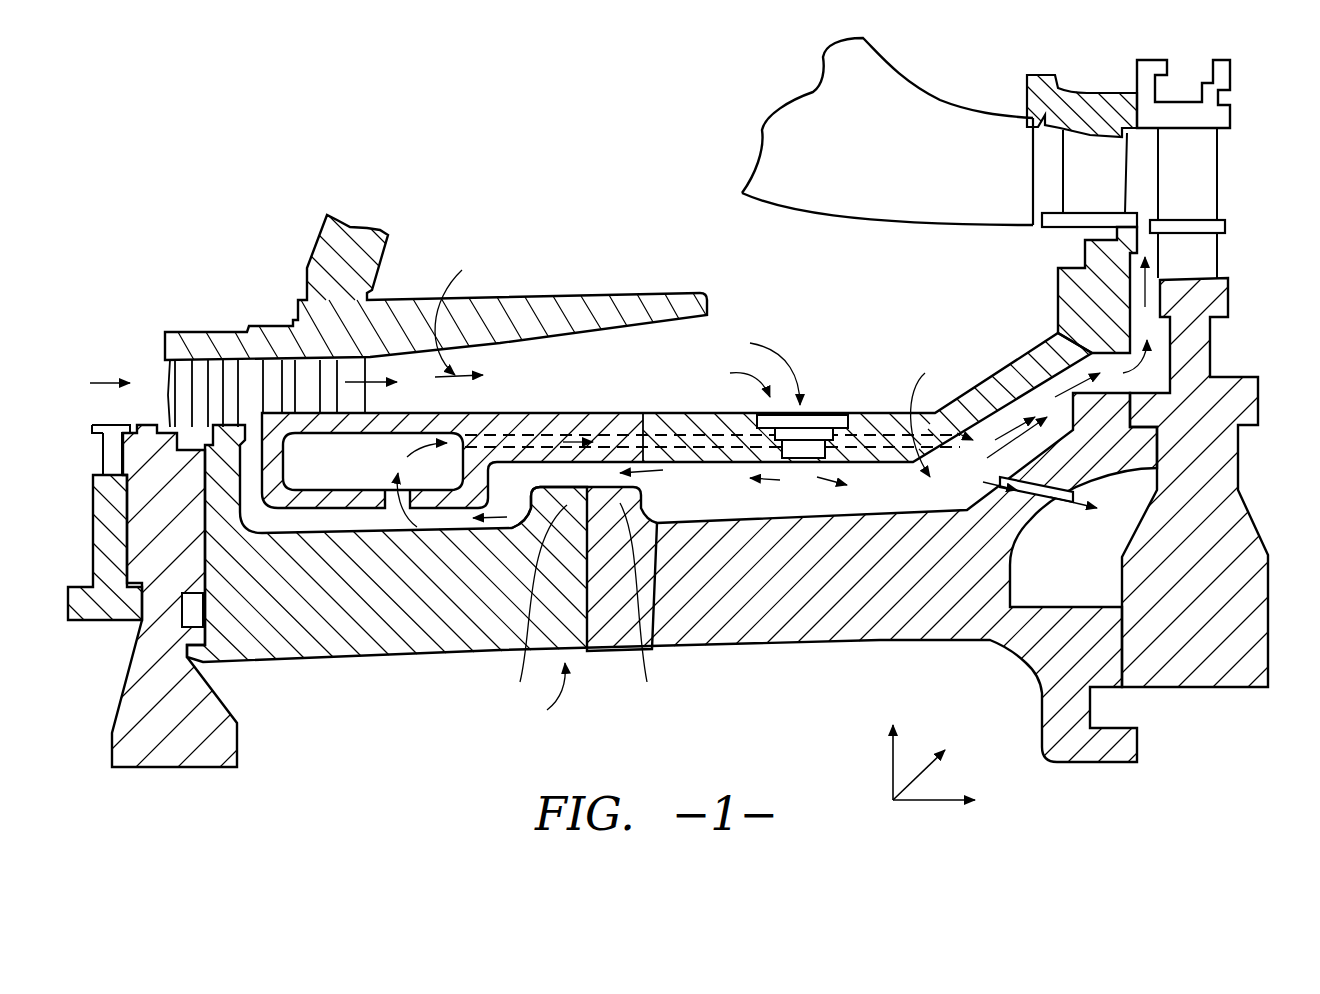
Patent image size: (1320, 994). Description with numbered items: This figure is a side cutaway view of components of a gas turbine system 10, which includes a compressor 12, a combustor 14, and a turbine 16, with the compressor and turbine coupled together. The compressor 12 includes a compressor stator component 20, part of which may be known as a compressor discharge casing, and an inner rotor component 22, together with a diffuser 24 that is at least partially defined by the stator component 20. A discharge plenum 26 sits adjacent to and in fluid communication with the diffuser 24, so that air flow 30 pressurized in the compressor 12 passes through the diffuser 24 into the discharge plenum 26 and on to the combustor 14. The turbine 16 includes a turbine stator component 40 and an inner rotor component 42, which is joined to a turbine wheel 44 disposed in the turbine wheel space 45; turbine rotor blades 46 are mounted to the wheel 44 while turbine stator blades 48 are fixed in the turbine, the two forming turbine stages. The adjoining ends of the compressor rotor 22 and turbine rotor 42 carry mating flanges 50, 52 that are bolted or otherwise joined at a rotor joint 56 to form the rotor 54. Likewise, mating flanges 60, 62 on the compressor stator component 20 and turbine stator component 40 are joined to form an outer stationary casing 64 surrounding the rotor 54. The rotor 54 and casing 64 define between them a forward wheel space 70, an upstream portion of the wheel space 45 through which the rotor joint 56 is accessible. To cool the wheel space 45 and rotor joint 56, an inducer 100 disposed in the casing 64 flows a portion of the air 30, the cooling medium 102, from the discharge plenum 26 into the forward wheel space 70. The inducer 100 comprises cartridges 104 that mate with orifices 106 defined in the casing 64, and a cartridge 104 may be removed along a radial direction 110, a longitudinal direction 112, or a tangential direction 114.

The gas turbine system 10 is at (420, 158).
The compressor 12 is at (263, 383).
The combustor 14 is at (753, 120).
The turbine 16 is at (1253, 143).
The compressor stator component 20 is at (532, 420).
The inner rotor component 22 is at (337, 643).
The diffuser 24 is at (505, 388).
The discharge plenum 26 is at (740, 266).
The air flow 30 is at (695, 356).
The turbine stator component 40 is at (883, 413).
The inner rotor component 42 is at (850, 640).
The turbine wheel 44 is at (1260, 617).
The turbine wheel space 45 is at (1255, 336).
The turbine rotor blades 46 is at (1197, 195).
The turbine stator blades 48 is at (1107, 187).
The mating flange 50 is at (530, 645).
The mating flange 52 is at (647, 645).
The rotor 54 is at (536, 697).
The rotor joint 56 is at (600, 530).
The mating flange 60 is at (623, 420).
The mating flange 62 is at (662, 420).
The casing 64 is at (700, 403).
The forward wheel space 70 is at (878, 504).
The inducer 100 is at (840, 387).
The cooling medium 102 is at (1013, 430).
The cartridge 104 is at (815, 425).
The orifice 106 is at (838, 410).
The radial direction 110 is at (890, 790).
The longitudinal direction 112 is at (945, 810).
The tangential direction 114 is at (922, 775).